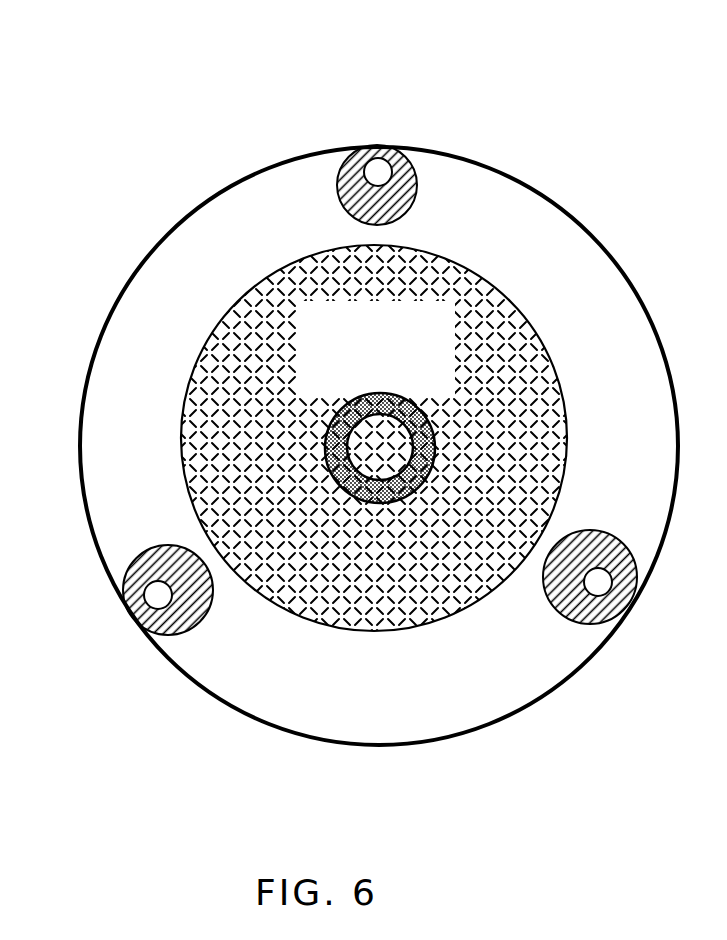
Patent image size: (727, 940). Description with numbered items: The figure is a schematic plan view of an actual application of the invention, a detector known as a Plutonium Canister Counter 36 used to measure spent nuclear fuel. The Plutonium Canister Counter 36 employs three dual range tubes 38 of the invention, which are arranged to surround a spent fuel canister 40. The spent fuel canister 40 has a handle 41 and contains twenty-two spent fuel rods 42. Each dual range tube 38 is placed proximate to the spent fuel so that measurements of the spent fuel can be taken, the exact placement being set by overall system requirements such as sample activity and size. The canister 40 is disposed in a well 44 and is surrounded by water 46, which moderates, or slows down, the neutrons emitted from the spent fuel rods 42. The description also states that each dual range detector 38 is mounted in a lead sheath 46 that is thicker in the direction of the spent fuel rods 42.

The Plutonium Canister Counter 36 is at (390, 431).
The dual range tube 38 is at (375, 175).
The spent fuel canister 40 is at (513, 297).
The handle 41 is at (440, 431).
The spent fuel rods 42 is at (423, 277).
The well 44 is at (230, 703).
The water 46 is at (410, 207).